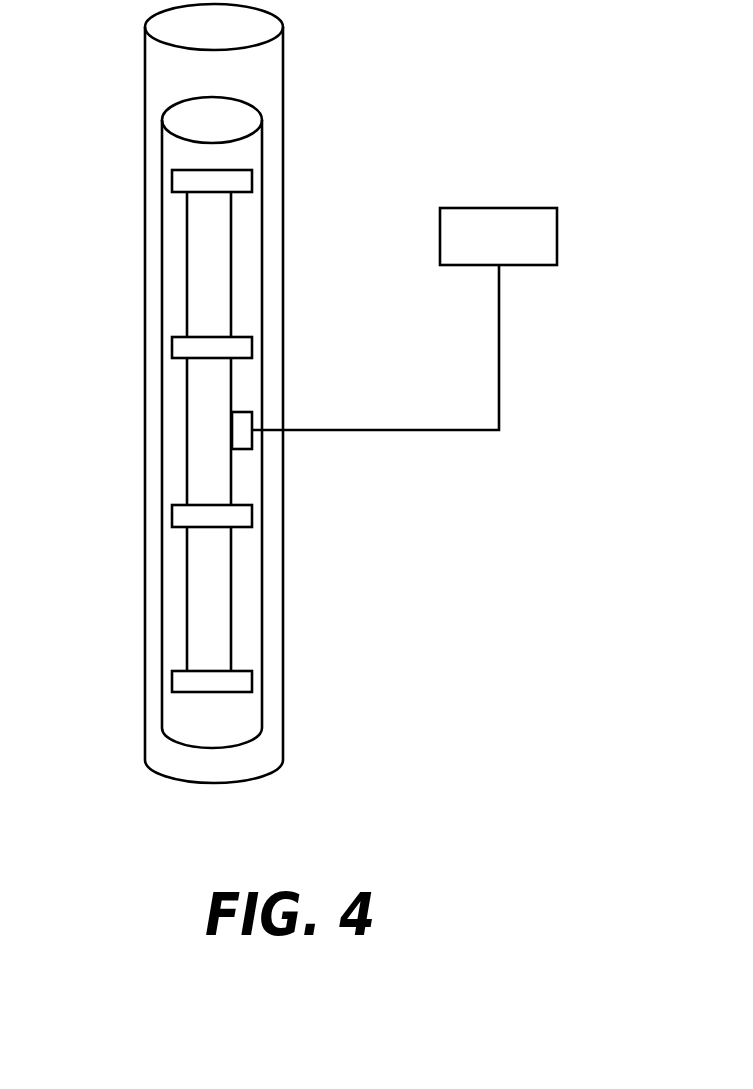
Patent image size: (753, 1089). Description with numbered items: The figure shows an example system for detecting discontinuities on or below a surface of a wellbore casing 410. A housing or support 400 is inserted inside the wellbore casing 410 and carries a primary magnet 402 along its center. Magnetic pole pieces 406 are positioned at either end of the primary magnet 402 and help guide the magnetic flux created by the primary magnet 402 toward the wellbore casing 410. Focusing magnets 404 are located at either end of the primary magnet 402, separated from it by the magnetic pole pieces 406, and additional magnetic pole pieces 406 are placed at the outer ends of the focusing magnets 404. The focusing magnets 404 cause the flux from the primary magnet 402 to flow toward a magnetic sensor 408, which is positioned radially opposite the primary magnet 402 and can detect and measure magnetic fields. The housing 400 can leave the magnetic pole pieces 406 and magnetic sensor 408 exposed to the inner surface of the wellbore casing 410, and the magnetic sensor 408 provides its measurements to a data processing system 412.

The housing 400 is at (162, 135).
The primary magnet 402 is at (205, 448).
The focusing magnets 404 is at (205, 280).
The magnetic pole pieces 406 is at (242, 183).
The magnetic sensor 408 is at (242, 425).
The wellbore casing 410 is at (283, 103).
The data processing system 412 is at (557, 236).